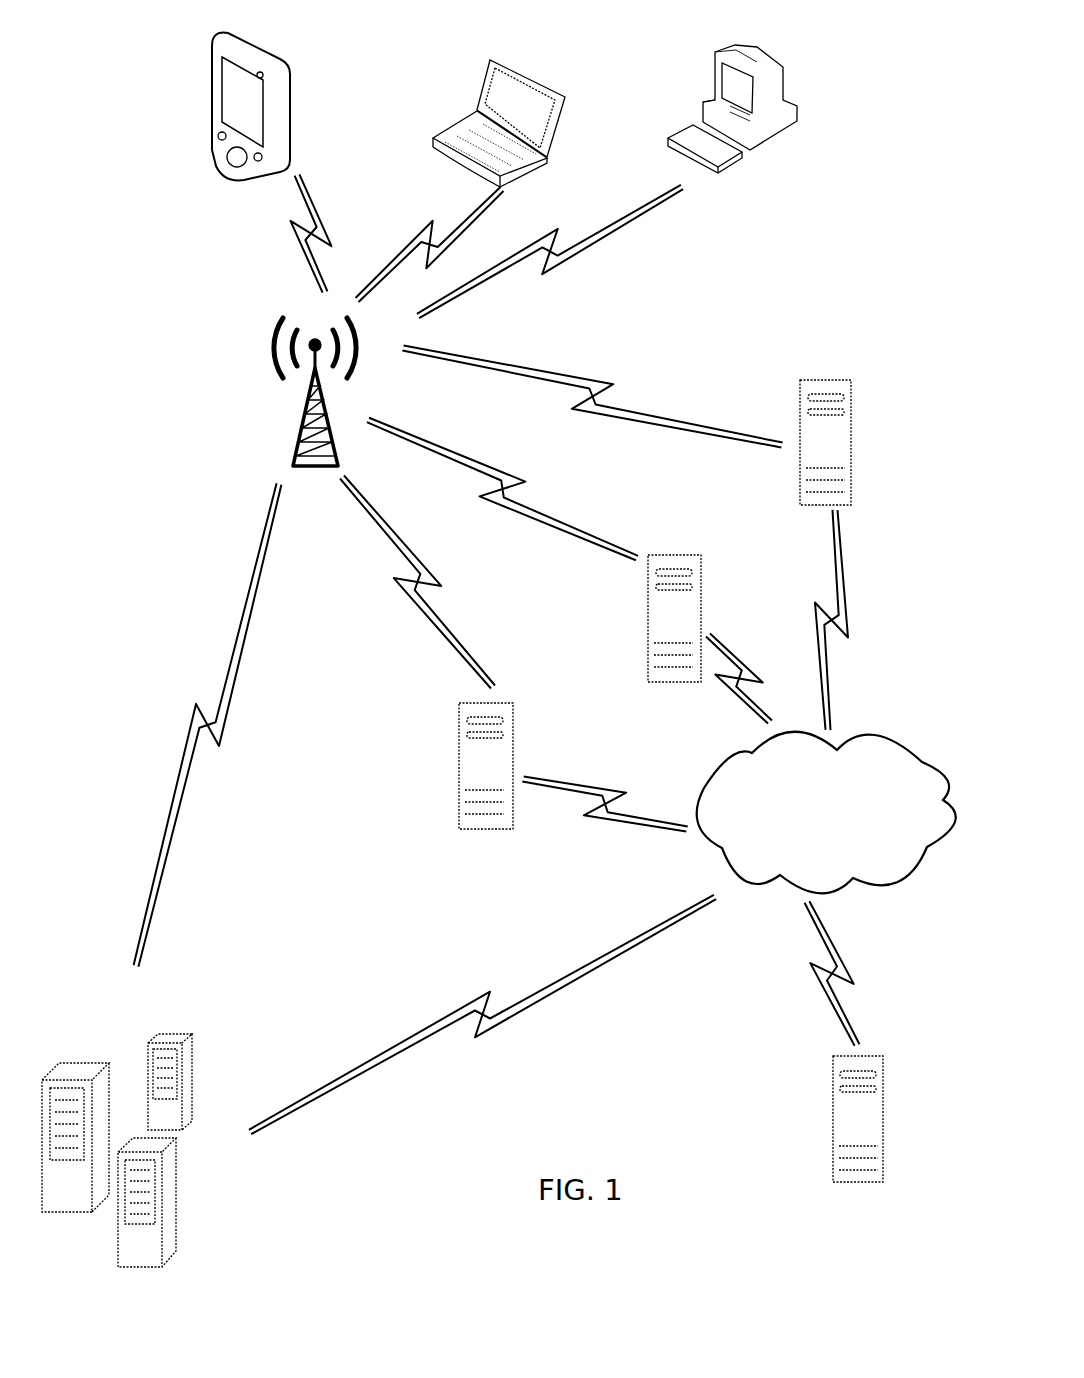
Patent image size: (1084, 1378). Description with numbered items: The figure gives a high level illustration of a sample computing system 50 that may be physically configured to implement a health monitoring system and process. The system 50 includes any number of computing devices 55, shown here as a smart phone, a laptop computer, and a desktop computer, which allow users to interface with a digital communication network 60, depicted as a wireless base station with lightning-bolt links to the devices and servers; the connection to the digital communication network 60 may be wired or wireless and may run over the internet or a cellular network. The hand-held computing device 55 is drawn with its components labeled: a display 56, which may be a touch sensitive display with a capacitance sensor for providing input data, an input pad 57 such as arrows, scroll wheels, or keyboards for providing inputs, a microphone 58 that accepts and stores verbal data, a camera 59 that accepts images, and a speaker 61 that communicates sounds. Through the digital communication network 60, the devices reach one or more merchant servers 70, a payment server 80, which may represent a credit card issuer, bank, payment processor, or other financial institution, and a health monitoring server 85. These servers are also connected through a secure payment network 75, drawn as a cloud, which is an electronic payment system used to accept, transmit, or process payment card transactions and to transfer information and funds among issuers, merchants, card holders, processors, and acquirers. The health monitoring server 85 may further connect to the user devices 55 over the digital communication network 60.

The computing system 50 is at (146, 330).
The computing device 55 is at (207, 63).
The display 56 is at (230, 98).
The input pad 57 is at (223, 168).
The microphone 58 is at (217, 135).
The camera 59 is at (260, 73).
The digital communication network 60 is at (262, 420).
The speaker 61 is at (262, 160).
The merchant server 70 is at (840, 442).
The payment network 75 is at (844, 823).
The payment server 80 is at (873, 1118).
The health monitoring server 85 is at (188, 1197).